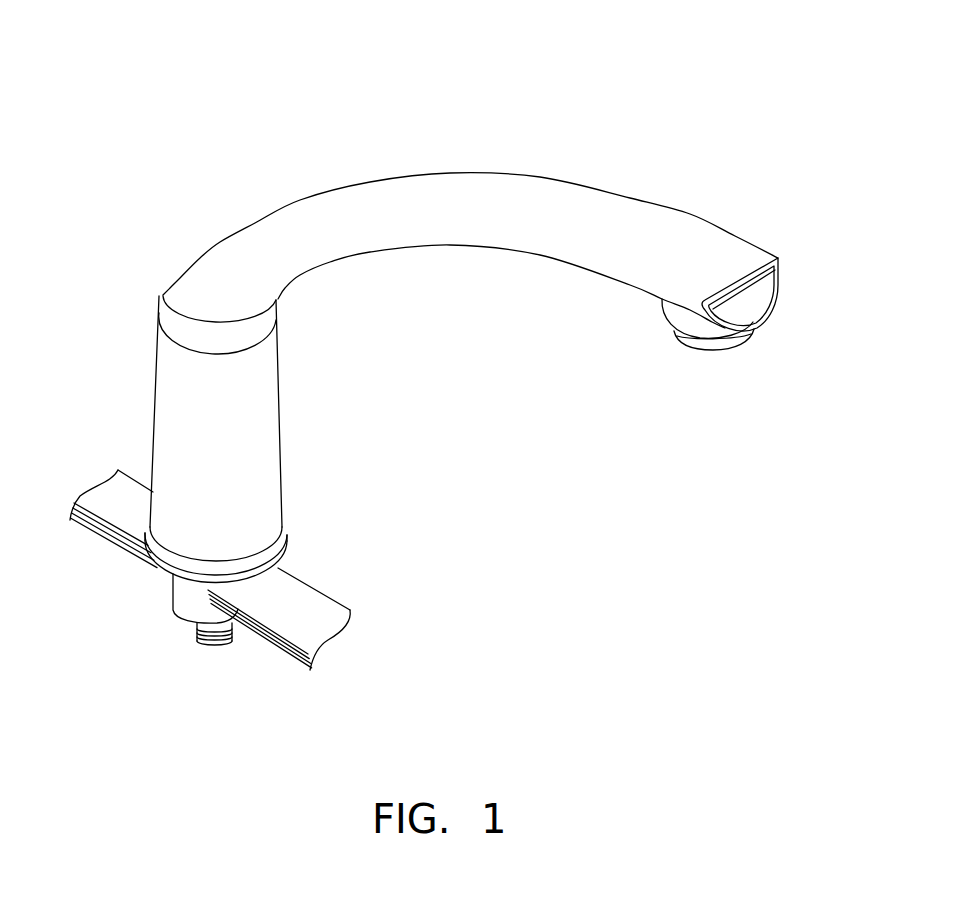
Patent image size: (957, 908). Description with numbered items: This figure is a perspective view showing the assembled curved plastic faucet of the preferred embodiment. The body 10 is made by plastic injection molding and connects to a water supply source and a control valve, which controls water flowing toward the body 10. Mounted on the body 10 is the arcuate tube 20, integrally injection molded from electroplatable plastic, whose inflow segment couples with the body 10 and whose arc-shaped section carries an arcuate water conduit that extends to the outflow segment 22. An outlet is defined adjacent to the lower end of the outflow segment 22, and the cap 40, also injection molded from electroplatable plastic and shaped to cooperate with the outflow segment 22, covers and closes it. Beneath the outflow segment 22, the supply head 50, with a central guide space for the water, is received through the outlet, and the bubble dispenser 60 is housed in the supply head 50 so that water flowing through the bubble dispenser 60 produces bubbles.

The body 10 is at (313, 588).
The arcuate tube 20 is at (315, 193).
The outflow segment 22 is at (732, 287).
The cap 40 is at (765, 272).
The supply head 50 is at (661, 310).
The bubble dispenser 60 is at (712, 350).